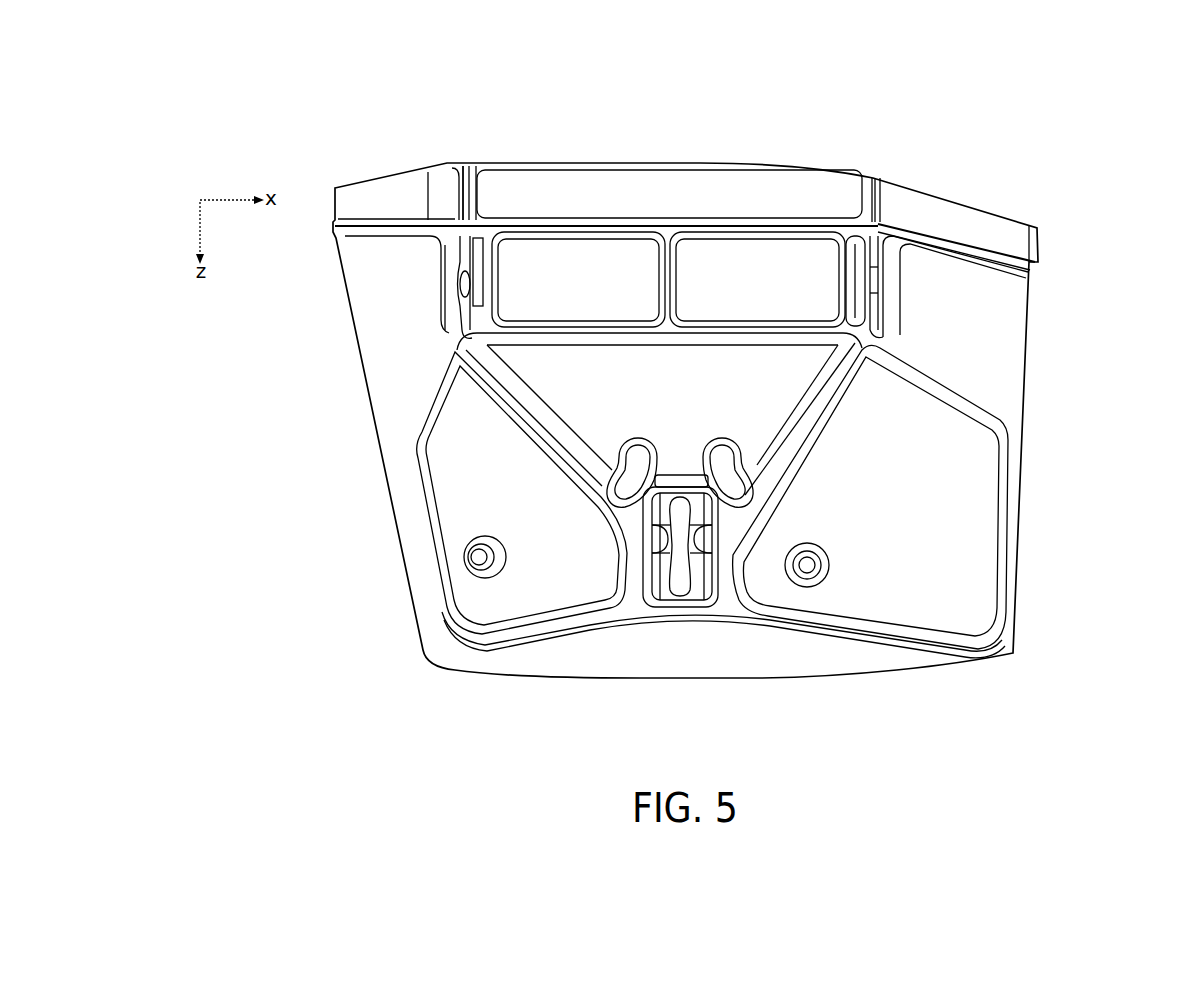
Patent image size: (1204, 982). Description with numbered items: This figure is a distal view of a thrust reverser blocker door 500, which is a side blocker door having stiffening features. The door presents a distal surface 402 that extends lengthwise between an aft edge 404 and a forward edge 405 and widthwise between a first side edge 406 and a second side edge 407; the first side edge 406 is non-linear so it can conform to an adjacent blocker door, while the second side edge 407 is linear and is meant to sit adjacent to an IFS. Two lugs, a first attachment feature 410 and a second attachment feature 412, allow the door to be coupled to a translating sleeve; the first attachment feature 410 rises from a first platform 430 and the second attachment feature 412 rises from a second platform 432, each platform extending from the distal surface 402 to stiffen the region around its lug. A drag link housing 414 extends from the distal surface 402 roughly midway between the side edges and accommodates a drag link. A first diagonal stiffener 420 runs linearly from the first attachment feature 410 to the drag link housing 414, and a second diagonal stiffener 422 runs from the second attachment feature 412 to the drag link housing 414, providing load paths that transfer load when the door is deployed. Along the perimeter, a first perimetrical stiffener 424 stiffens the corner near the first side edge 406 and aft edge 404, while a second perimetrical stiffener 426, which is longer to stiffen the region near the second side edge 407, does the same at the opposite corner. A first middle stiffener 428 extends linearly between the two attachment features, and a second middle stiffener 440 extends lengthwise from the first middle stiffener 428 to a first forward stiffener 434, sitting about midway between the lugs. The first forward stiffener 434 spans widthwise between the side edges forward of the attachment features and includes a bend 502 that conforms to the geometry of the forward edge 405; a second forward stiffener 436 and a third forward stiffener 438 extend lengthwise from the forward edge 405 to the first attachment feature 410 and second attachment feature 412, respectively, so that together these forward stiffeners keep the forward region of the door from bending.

The distal surface 402 is at (850, 532).
The aft edge 404 is at (688, 694).
The forward edge 405 is at (728, 148).
The first side edge 406 is at (355, 412).
The second side edge 407 is at (1044, 474).
The first attachment feature 410 is at (455, 283).
The second attachment feature 412 is at (872, 277).
The drag link housing 414 is at (677, 485).
The first diagonal stiffener 420 is at (540, 434).
The second diagonal stiffener 422 is at (807, 437).
The first perimetrical stiffener 424 is at (427, 530).
The second perimetrical stiffener 426 is at (962, 392).
The first middle stiffener 428 is at (770, 342).
The first platform 430 is at (488, 266).
The second platform 432 is at (890, 295).
The first forward stiffener 434 is at (785, 218).
The second forward stiffener 436 is at (463, 190).
The third forward stiffener 438 is at (877, 185).
The second middle stiffener 440 is at (668, 267).
The blocker door 500 is at (1100, 152).
The bend 502 is at (907, 228).